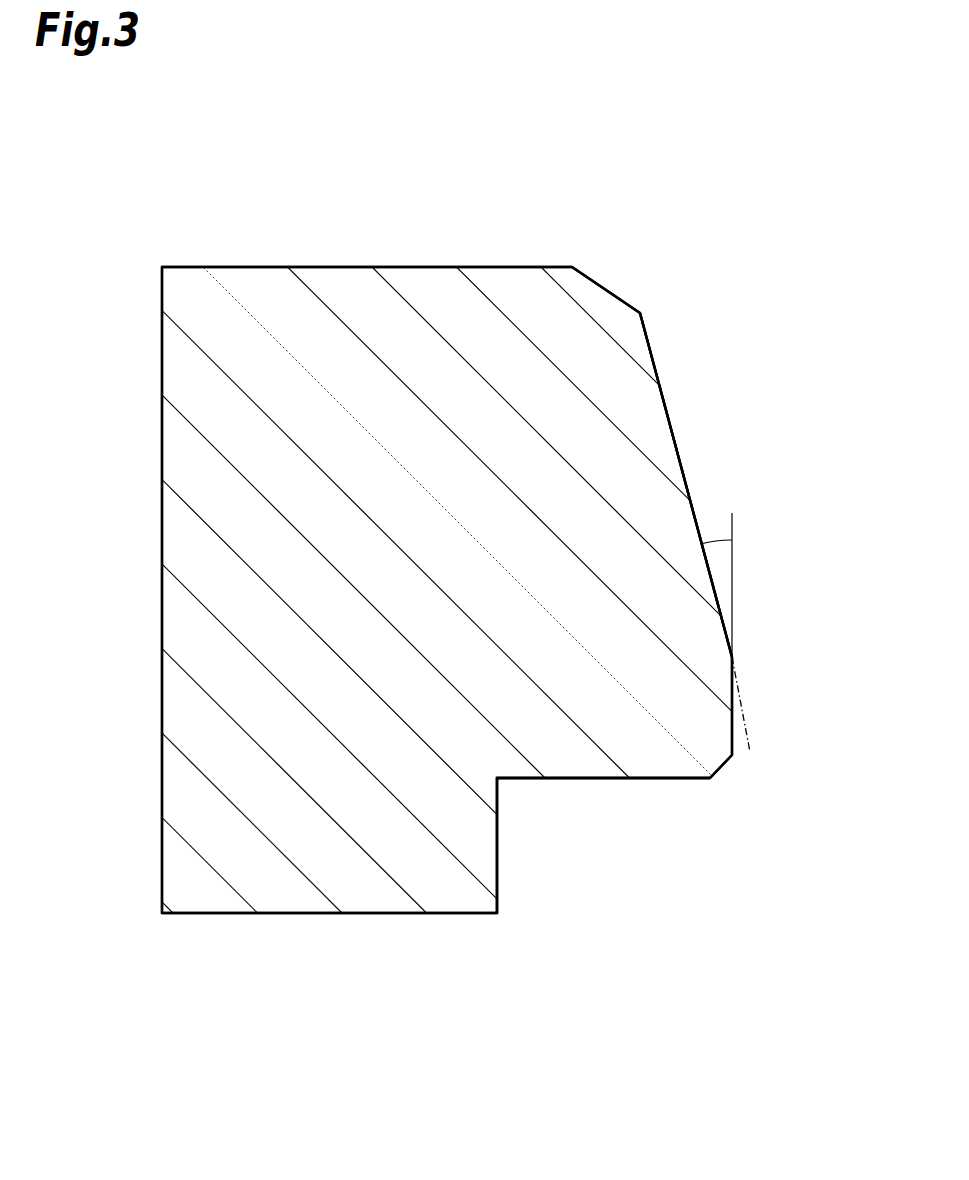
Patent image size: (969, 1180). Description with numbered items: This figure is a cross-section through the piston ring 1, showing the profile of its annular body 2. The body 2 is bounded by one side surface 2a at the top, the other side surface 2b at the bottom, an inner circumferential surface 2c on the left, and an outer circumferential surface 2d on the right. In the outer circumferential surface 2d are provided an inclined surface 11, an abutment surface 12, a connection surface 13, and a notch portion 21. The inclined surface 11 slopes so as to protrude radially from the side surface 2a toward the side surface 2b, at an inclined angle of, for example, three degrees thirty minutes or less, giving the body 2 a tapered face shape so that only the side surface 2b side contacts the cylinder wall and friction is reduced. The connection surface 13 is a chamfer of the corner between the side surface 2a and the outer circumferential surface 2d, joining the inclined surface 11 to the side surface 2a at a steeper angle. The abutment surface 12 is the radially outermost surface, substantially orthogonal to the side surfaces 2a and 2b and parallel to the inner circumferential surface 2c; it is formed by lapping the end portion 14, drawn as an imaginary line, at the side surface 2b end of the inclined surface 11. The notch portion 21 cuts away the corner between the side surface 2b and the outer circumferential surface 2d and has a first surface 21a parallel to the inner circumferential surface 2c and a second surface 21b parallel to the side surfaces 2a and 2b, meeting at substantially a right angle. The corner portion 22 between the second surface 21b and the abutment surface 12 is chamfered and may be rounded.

The piston ring 1 is at (284, 235).
The annular body 2 is at (470, 300).
The side surface 2a is at (368, 267).
The side surface 2b is at (368, 915).
The inner circumferential surface 2c is at (162, 711).
The outer circumferential surface 2d is at (688, 462).
The inclined surface 11 is at (662, 390).
The abutment surface 12 is at (735, 715).
The connection surface 13 is at (607, 290).
The end portion 14 is at (748, 730).
The notch portion 21 is at (527, 940).
The first surface 21a is at (497, 845).
The second surface 21b is at (634, 780).
The corner portion 22 is at (720, 770).